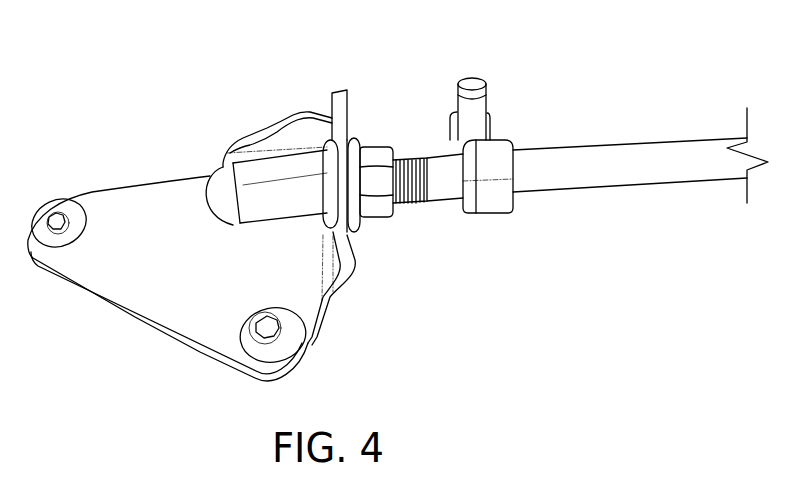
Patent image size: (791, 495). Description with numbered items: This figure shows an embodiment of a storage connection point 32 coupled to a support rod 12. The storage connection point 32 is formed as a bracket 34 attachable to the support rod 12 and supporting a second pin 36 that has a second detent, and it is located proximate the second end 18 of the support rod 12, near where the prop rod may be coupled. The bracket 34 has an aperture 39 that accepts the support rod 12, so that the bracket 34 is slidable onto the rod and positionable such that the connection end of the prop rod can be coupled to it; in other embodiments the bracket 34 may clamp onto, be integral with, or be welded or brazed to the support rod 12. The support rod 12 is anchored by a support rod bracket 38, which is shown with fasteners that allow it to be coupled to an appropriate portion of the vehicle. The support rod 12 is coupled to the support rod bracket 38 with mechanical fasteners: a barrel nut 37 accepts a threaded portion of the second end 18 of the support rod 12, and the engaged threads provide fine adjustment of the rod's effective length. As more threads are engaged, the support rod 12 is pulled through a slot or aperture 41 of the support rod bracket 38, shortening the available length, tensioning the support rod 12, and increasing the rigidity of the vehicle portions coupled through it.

The support rod 12 is at (613, 167).
The second end of the support rod 18 is at (409, 112).
The storage connection point 32 is at (512, 112).
The bracket 34 is at (497, 195).
The second pin 36 is at (473, 78).
The barrel nut 37 is at (247, 176).
The support rod bracket 38 is at (130, 210).
The aperture 39 is at (470, 192).
The slot or aperture 41 is at (343, 153).